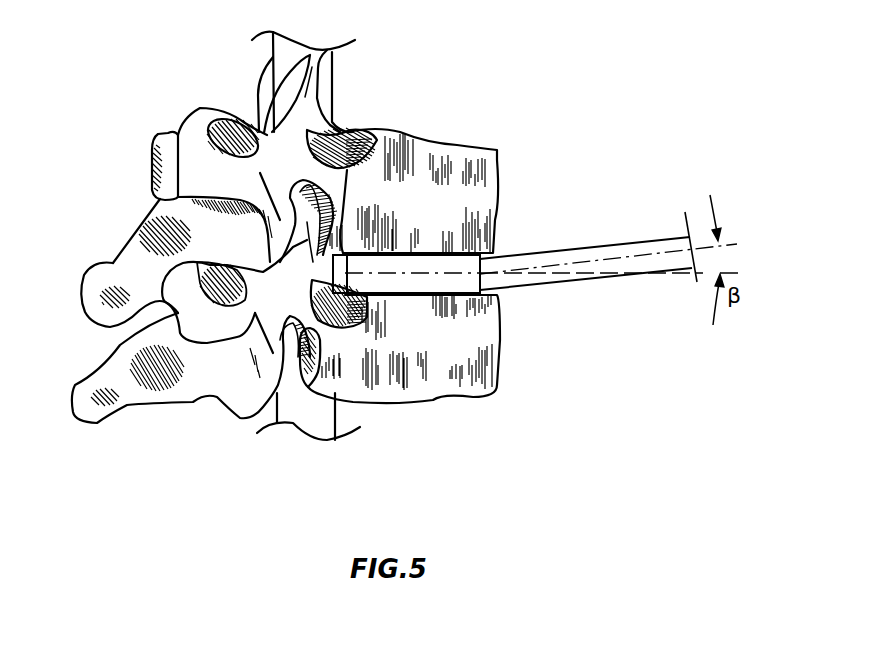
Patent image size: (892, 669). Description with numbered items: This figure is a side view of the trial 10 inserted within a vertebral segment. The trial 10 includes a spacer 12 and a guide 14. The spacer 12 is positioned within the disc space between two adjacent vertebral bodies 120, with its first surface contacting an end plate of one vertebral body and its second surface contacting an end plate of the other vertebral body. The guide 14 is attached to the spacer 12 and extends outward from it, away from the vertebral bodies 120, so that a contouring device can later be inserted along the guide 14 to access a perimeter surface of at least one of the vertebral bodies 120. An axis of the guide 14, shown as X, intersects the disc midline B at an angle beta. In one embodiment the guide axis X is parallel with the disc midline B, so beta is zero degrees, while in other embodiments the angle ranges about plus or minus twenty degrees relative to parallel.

The trial 10 is at (515, 313).
The spacer 12 is at (423, 282).
The guide 14 is at (650, 237).
The vertebral bodies 120 is at (487, 146).
The guide axis X is at (620, 258).
The disc midline B is at (688, 272).